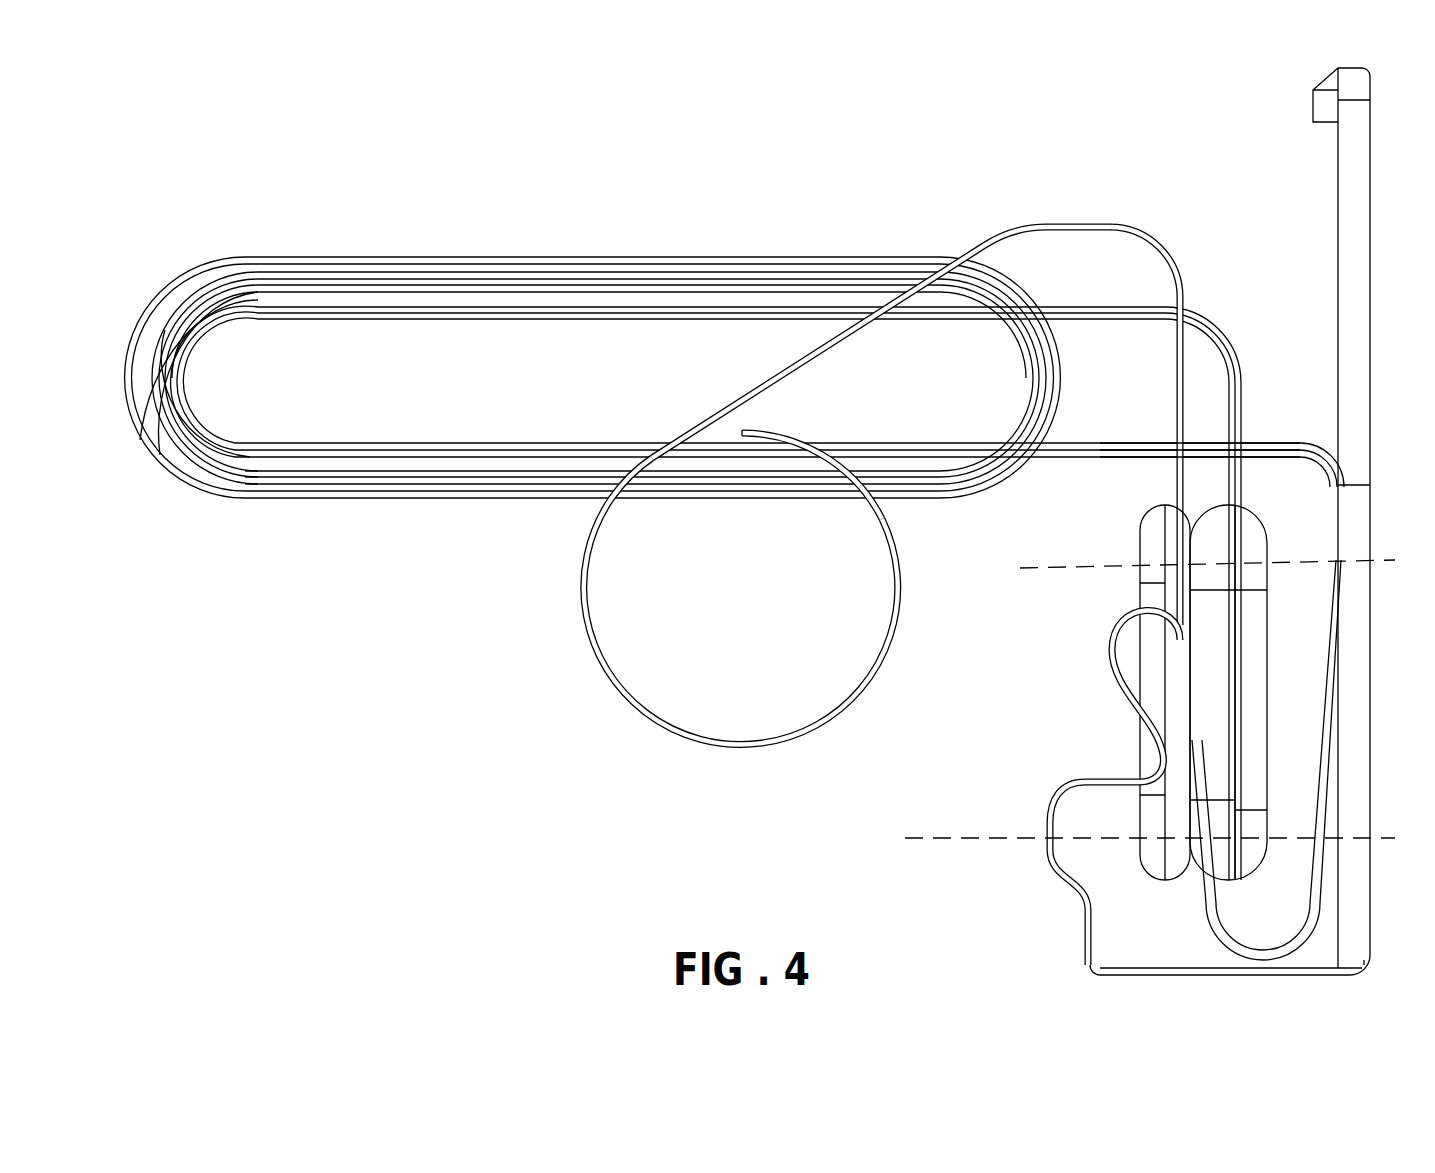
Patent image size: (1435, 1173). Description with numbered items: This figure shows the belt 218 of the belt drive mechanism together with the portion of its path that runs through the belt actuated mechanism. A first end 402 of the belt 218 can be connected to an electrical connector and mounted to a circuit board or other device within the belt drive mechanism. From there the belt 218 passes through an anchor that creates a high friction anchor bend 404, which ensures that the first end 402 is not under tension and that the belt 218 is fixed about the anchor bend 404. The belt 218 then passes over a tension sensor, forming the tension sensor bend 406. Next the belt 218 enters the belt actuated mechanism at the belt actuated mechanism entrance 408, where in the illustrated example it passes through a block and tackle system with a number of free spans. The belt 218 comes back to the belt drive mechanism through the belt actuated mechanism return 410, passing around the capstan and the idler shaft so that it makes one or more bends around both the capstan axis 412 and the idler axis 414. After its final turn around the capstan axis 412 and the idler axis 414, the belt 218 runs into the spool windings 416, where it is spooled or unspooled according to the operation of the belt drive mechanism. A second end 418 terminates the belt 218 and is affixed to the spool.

The belt 218 is at (405, 257).
The first end 402 is at (1322, 111).
The anchor bend 404 is at (1148, 653).
The tension sensor bend 406 is at (1257, 913).
The belt actuated mechanism entrance 408 is at (1137, 448).
The belt actuated mechanism return 410 is at (1137, 302).
The capstan axis 412 is at (1108, 838).
The idler axis 414 is at (1165, 559).
The spool windings 416 is at (741, 601).
The second end 418 is at (762, 430).